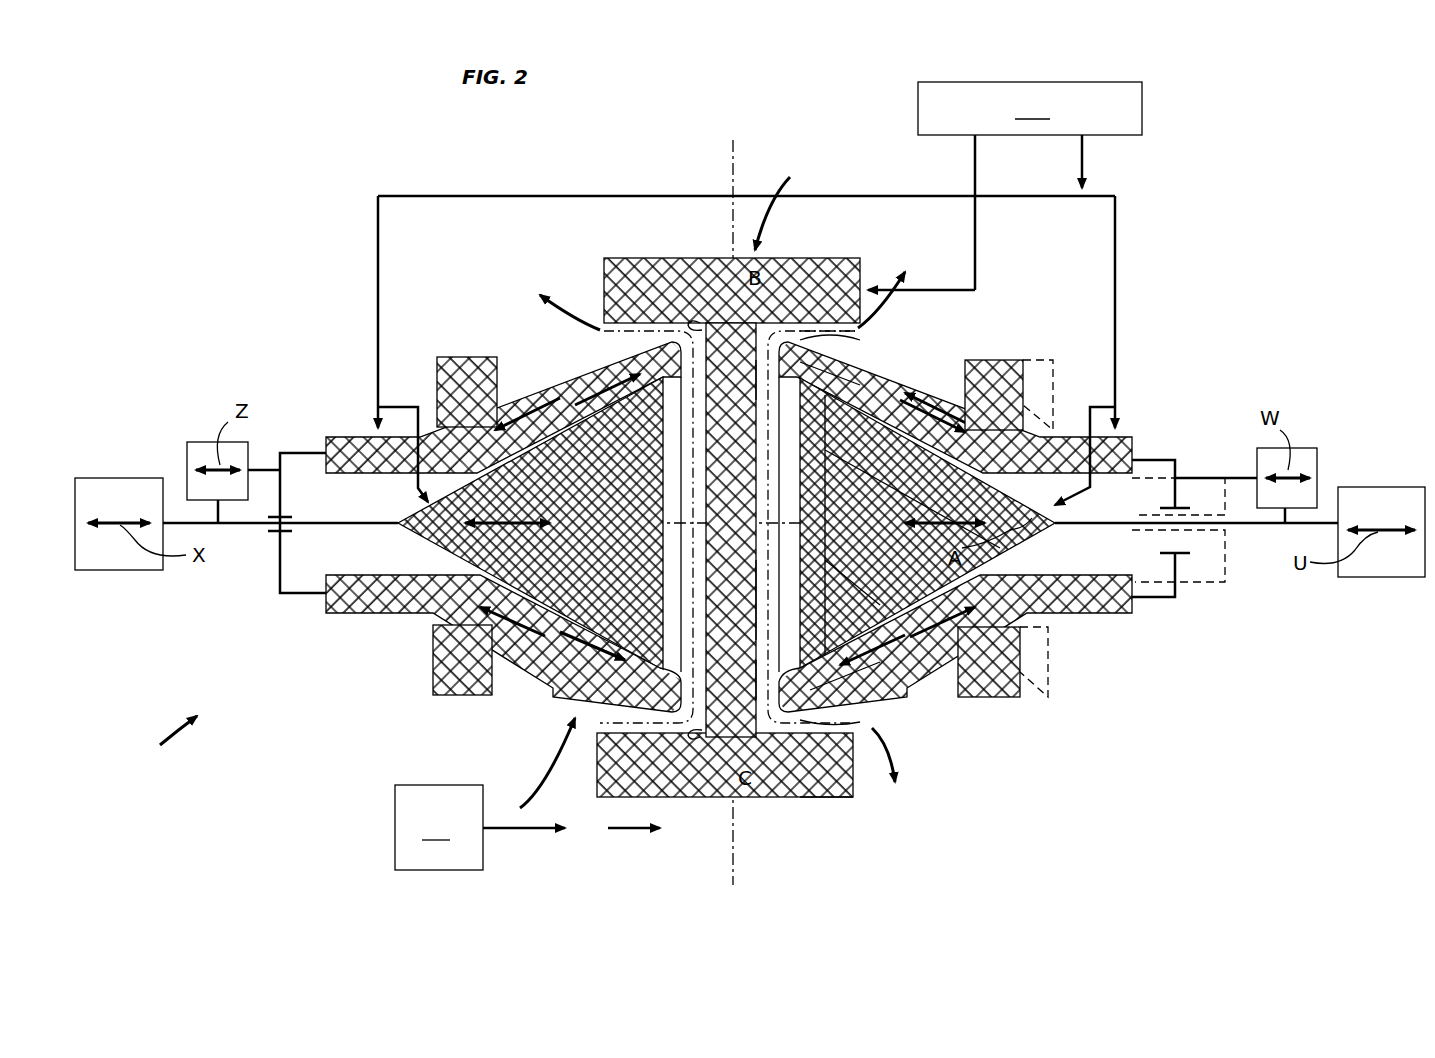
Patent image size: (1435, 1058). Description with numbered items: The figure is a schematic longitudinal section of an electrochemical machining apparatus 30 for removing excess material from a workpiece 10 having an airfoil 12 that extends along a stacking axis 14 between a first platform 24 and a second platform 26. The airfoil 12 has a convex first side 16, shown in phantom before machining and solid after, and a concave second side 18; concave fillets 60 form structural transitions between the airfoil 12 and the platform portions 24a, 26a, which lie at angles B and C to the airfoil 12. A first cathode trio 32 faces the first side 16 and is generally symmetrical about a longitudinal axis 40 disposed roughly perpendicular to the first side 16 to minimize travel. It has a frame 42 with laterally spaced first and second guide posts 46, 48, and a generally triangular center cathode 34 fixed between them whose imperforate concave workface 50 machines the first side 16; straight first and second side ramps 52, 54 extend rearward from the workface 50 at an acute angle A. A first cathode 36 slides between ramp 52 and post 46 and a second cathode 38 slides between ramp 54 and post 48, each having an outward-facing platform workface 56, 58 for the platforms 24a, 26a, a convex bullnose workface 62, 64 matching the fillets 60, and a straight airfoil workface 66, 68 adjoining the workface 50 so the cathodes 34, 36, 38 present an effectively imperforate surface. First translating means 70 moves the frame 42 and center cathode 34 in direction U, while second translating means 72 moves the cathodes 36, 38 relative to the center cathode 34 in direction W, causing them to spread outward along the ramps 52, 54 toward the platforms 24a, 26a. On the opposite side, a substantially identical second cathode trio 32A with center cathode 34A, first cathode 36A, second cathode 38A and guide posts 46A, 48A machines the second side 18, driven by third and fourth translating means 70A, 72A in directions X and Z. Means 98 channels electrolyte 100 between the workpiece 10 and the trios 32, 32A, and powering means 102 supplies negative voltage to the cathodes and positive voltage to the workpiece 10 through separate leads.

The workpiece 10 is at (786, 200).
The airfoil 12 is at (712, 472).
The stacking axis 14 is at (730, 157).
The airfoil first side 16 is at (748, 605).
The airfoil second side 18 is at (692, 600).
The first platform 24 is at (650, 258).
The first platform 24a is at (826, 325).
The second platform 26 is at (760, 798).
The second platform 26a is at (808, 788).
The electrochemical machining apparatus 30 is at (171, 748).
The first cathode trio 32 is at (1130, 622).
The second cathode trio 32A is at (382, 622).
The center cathode 34 is at (886, 489).
The center cathode 34A is at (630, 481).
The first cathode 36 is at (940, 375).
The first cathode 36A is at (540, 378).
The second cathode 38 is at (925, 690).
The second cathode 38A is at (588, 718).
The longitudinal axis 40 is at (912, 513).
The frame 42 is at (1040, 680).
The first guide post 46 is at (1015, 345).
The first guide post 46A is at (455, 357).
The second guide post 48 is at (985, 700).
The second guide post 48A is at (435, 672).
The center cathode workface 50 is at (790, 500).
The first side ramp 52 is at (928, 470).
The second side ramp 54 is at (882, 610).
The platform workface 56 is at (882, 338).
The platform workface 58 is at (870, 722).
The concave fillets 60 is at (694, 322).
The arcuate workface 62 is at (828, 375).
The arcuate workface 64 is at (845, 681).
The airfoil workface 66 is at (754, 388).
The airfoil workface 68 is at (750, 684).
The first translating means 70 is at (1380, 578).
The third translating means 70A is at (120, 570).
The second translating means 72 is at (1318, 458).
The fourth translating means 72A is at (190, 452).
The electrolyte channeling means 98 is at (527, 827).
The electrolyte 100 is at (596, 315).
The powering means 102 is at (760, 293).